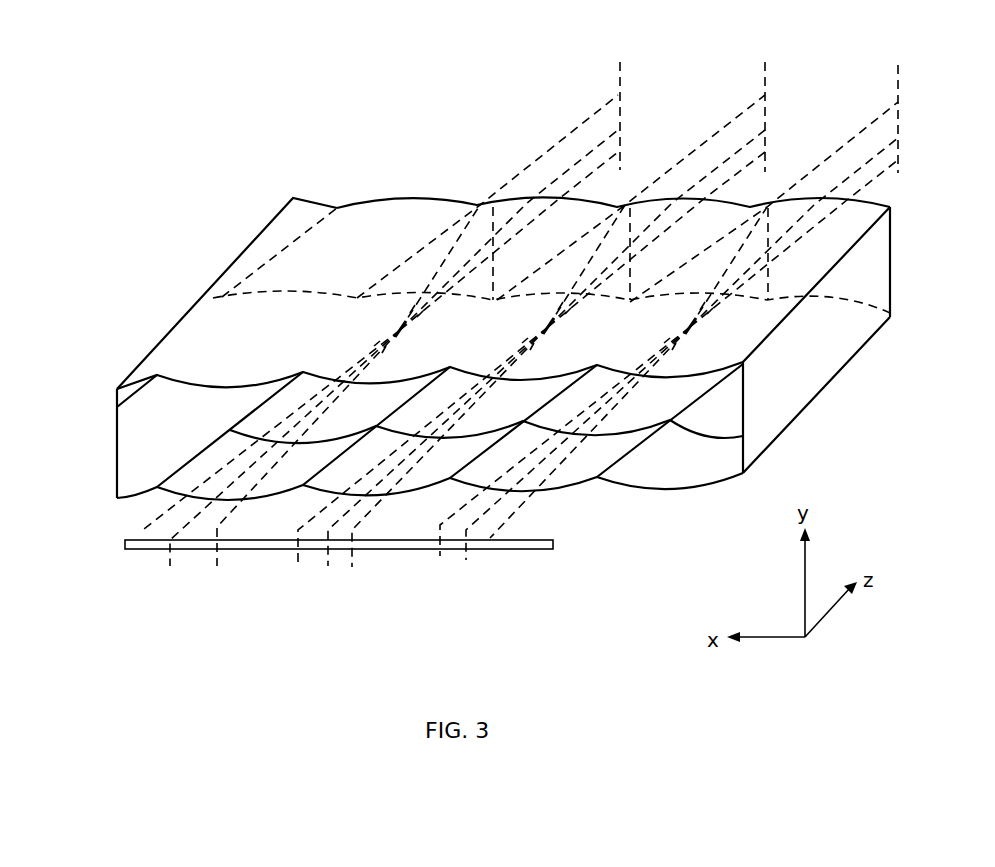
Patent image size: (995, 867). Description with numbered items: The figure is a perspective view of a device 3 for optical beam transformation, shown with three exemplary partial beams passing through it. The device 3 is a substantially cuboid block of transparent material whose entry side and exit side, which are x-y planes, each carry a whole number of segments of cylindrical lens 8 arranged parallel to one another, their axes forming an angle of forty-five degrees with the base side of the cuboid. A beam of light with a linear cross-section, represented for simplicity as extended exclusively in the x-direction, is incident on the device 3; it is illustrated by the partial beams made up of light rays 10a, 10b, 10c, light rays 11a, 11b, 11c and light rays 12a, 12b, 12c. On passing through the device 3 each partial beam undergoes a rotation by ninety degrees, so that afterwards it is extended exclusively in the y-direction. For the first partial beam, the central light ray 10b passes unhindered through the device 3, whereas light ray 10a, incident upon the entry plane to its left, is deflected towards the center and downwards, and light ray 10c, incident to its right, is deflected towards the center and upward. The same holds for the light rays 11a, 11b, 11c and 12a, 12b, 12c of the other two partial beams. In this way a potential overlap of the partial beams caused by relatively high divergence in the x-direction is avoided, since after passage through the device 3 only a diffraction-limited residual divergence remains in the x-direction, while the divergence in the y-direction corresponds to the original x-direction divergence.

The device for optical beam transformation 3 is at (185, 310).
The segment of cylindrical lens 8 is at (397, 195).
The light ray 10a is at (593, 170).
The light ray 10b is at (565, 166).
The light ray 10c is at (527, 166).
The light ray 11a is at (730, 175).
The light ray 11b is at (722, 158).
The light ray 11c is at (710, 135).
The light ray 12a is at (877, 172).
The light ray 12b is at (867, 158).
The light ray 12c is at (855, 135).